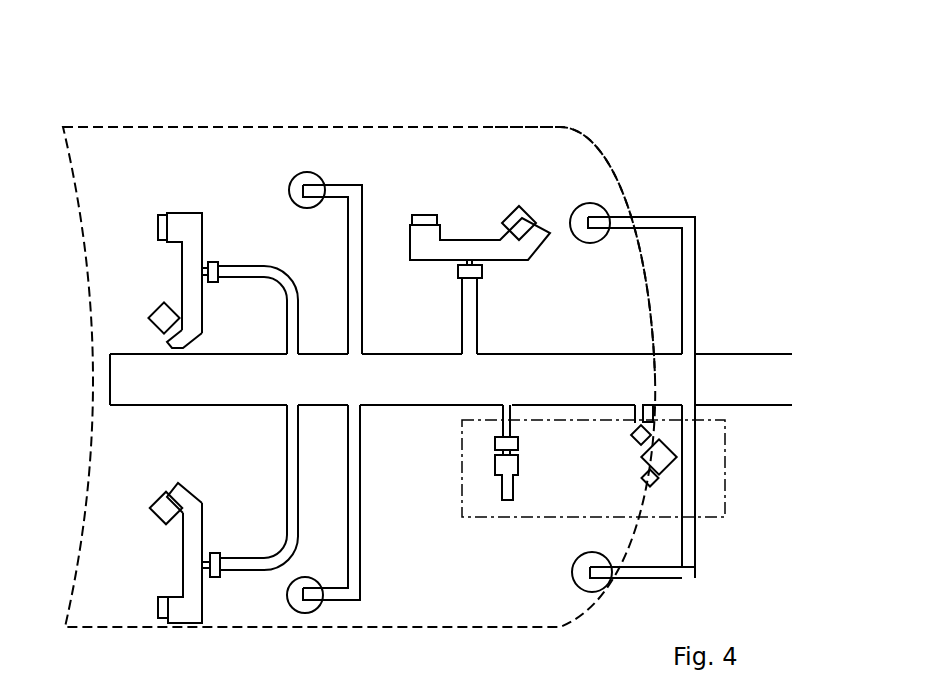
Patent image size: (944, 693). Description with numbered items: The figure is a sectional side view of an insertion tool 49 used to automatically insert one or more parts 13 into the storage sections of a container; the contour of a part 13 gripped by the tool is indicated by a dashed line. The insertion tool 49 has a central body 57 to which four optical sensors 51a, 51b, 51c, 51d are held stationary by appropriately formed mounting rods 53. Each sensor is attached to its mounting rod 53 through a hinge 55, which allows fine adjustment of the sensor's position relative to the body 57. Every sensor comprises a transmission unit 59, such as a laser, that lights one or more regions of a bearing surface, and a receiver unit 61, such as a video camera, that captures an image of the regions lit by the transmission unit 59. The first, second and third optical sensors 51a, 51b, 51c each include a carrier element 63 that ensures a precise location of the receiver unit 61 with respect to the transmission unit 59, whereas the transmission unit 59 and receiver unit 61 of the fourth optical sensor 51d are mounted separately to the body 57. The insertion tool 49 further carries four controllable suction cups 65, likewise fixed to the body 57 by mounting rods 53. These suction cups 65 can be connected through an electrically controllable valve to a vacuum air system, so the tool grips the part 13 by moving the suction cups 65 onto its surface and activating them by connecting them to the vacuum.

The part 13 is at (497, 125).
The insertion tool 49 is at (114, 99).
The first optical sensor 51a is at (503, 250).
The second optical sensor 51b is at (195, 255).
The third optical sensor 51c is at (193, 500).
The fourth optical sensor 51d is at (712, 498).
The mounting rod 53 is at (290, 308).
The hinge 55 is at (218, 263).
The body 57 is at (443, 397).
The transmission unit 59 is at (160, 227).
The receiver unit 61 is at (160, 316).
The carrier element 63 is at (187, 333).
The suction cup 65 is at (296, 188).